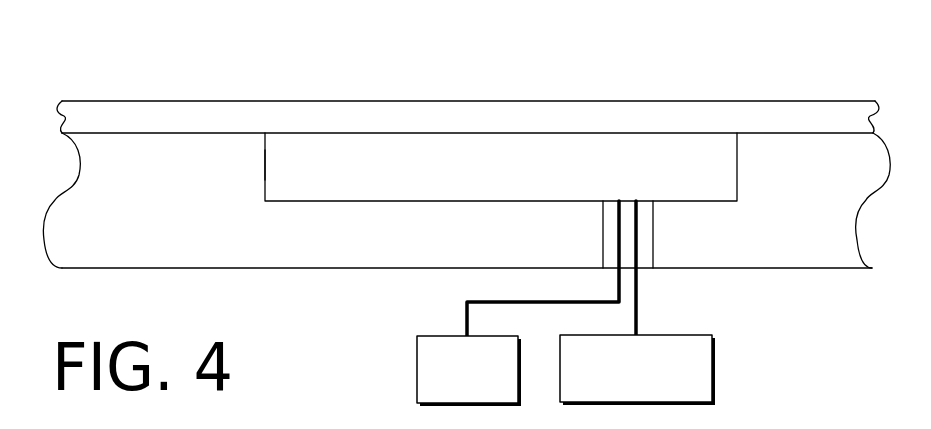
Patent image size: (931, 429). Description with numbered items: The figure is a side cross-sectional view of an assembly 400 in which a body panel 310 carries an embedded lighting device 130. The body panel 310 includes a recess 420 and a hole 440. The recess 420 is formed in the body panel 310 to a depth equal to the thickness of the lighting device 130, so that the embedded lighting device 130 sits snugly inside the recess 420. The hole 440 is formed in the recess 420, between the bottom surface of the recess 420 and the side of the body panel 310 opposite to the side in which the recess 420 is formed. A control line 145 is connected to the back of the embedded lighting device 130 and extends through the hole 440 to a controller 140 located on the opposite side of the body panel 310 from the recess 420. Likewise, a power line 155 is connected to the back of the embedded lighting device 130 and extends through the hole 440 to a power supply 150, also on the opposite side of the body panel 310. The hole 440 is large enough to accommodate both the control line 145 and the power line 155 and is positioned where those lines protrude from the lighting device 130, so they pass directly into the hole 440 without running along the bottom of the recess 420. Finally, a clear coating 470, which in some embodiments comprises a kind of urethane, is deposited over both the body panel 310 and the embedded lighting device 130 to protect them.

The electrochromic device assembly 400 is at (708, 74).
The clear coating 470 is at (128, 99).
The body panel 310 is at (109, 270).
The embedded lighting device 130 is at (385, 203).
The recess 420 is at (274, 164).
The hole 440 is at (654, 233).
The power line 155 is at (463, 320).
The control line 145 is at (640, 302).
The power supply 150 is at (416, 370).
The controller 140 is at (716, 367).